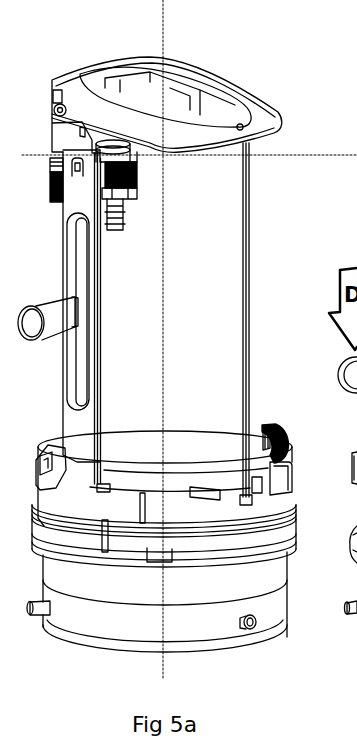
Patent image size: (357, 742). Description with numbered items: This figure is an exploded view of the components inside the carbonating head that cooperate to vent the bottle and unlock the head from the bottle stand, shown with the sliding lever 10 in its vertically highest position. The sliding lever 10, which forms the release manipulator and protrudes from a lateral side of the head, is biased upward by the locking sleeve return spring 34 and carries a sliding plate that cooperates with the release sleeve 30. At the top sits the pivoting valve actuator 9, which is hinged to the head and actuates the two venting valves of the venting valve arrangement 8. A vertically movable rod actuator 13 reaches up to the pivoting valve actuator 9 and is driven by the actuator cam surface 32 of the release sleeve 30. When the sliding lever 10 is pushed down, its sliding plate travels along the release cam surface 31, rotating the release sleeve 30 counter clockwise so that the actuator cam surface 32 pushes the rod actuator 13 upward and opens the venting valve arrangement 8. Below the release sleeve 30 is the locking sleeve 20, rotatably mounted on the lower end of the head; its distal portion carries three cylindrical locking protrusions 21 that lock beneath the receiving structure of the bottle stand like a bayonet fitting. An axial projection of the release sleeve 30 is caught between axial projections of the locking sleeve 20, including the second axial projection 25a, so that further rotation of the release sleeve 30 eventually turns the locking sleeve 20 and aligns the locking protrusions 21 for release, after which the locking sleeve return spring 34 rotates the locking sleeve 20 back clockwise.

The pivoting valve actuator 9 is at (117, 90).
The venting valve arrangement 8 is at (51, 202).
The rod actuator 13 is at (247, 192).
The sliding lever 10 is at (50, 322).
The release cam surface 31 is at (80, 474).
The actuator cam surface 32 is at (200, 480).
The locking sleeve return spring 34 is at (283, 434).
The release sleeve 30 is at (297, 482).
The second axial projection 25a is at (352, 537).
The locking sleeve 20 is at (90, 626).
The locking protrusion 21 is at (250, 632).